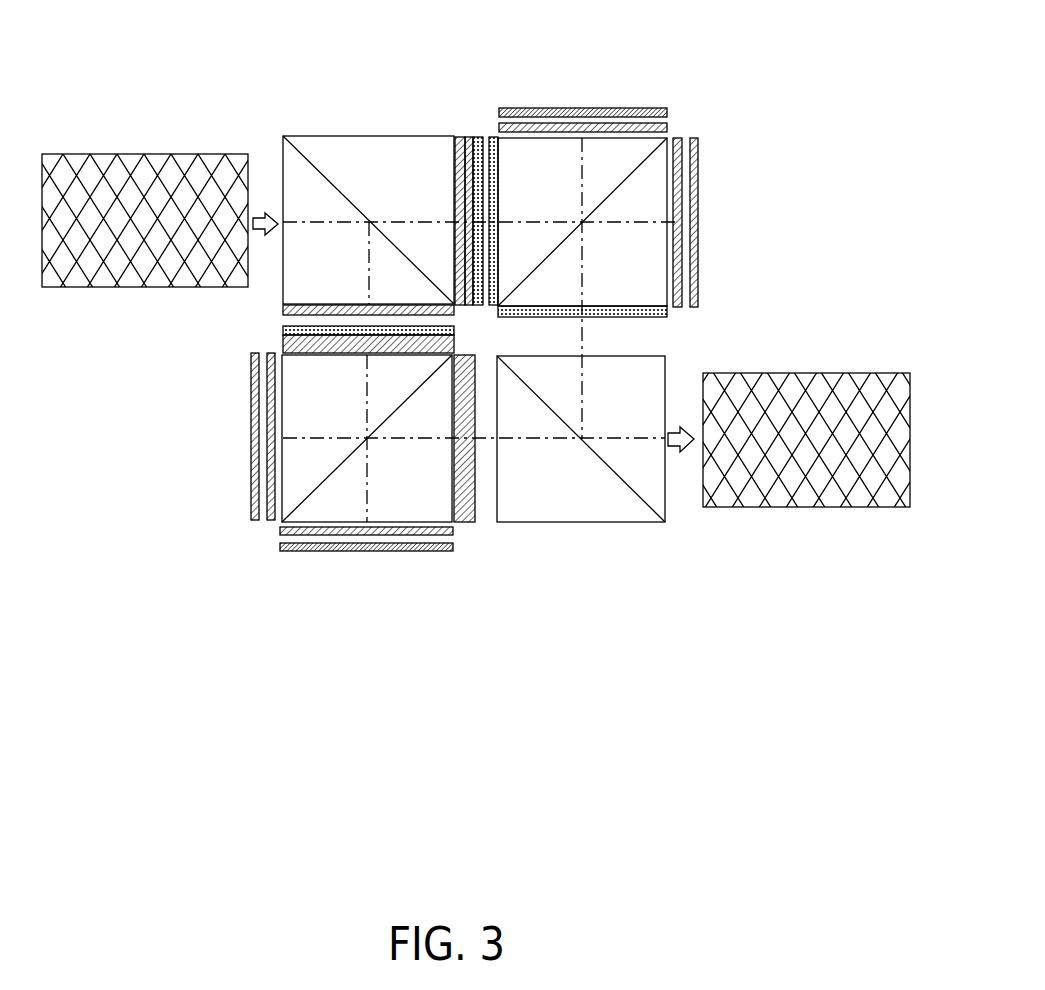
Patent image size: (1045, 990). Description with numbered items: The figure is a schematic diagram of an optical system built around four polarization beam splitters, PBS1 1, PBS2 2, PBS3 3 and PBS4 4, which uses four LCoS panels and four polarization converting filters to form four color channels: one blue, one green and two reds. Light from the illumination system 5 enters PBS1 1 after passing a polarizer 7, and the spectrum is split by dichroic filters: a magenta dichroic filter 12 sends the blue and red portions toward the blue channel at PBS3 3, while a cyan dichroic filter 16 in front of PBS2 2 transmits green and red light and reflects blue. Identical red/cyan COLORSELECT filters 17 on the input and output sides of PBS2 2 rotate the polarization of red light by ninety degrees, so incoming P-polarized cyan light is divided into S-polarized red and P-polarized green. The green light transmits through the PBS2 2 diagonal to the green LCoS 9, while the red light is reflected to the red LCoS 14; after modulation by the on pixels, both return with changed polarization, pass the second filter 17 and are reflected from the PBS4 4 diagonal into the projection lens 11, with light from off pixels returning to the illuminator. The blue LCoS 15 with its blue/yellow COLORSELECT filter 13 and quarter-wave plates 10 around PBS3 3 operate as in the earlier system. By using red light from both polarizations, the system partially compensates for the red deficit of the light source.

The PBS1 1 is at (332, 157).
The PBS2 2 is at (648, 185).
The PBS3 3 is at (426, 500).
The PBS4 4 is at (643, 385).
The illumination system 5 is at (80, 162).
The polarizer 7 is at (478, 136).
The LCoS (green) 9 is at (693, 177).
The quarter-wave plate 10 is at (648, 117).
The projection lens 11 is at (757, 487).
The magenta dichroic filter 12 is at (293, 313).
The blue/yellow COLORSELECT filter 13 is at (303, 342).
The LCoS (red) 14 is at (660, 126).
The LCoS (blue) 15 is at (297, 548).
The cyan dichroic filter 16 is at (457, 137).
The red/cyan COLORSELECT filter 17 is at (490, 137).